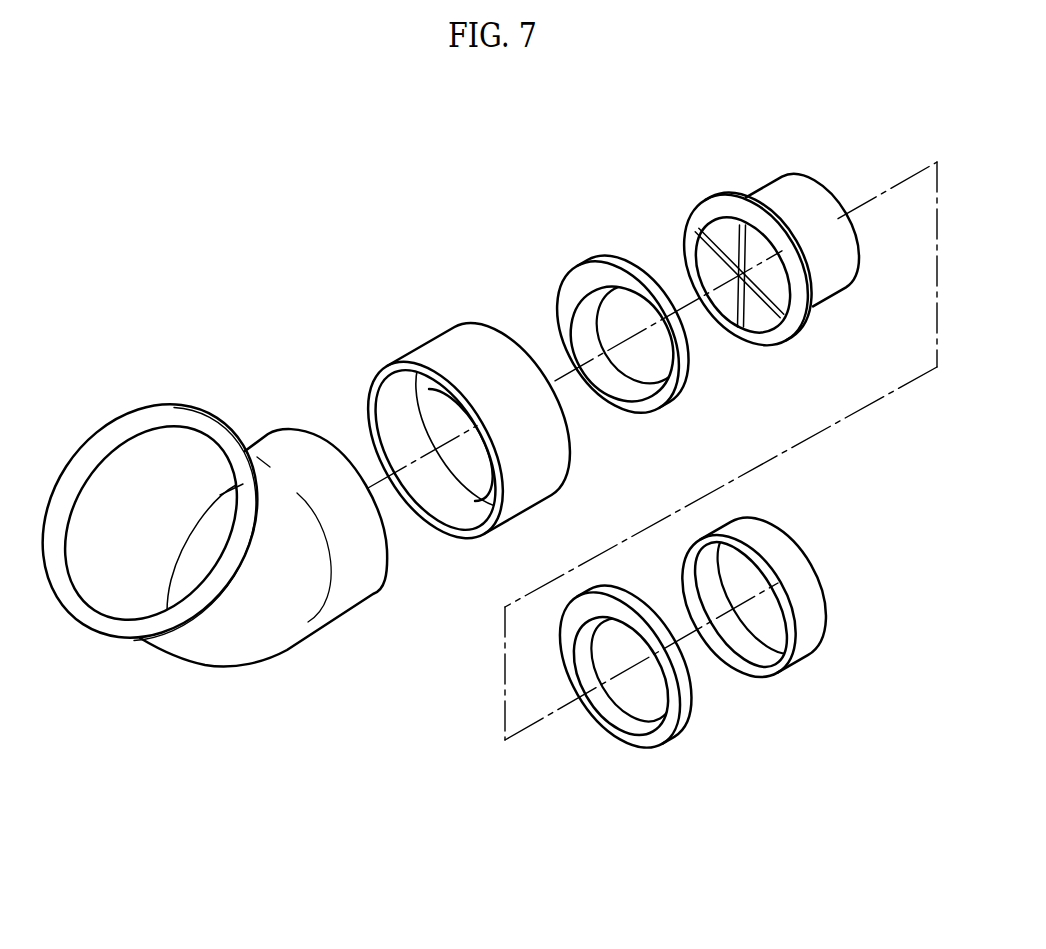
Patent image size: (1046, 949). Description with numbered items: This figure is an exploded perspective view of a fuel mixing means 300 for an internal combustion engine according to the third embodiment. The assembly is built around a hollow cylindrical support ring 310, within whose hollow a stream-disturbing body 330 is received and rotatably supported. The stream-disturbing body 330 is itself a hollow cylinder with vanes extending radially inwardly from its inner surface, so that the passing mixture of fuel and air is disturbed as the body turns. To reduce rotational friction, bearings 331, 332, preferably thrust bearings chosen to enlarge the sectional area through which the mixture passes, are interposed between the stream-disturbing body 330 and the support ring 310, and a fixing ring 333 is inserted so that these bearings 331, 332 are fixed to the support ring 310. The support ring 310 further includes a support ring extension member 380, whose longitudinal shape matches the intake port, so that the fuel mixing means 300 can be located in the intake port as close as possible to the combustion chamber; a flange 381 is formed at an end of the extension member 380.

The fuel mixing means 300 is at (430, 119).
The support ring 310 is at (420, 352).
The stream-disturbing body 330 is at (748, 194).
The bearing 331 is at (599, 264).
The bearing 332 is at (670, 733).
The fixing ring 333 is at (800, 663).
The support ring extension member 380 is at (312, 436).
The flange 381 is at (110, 627).